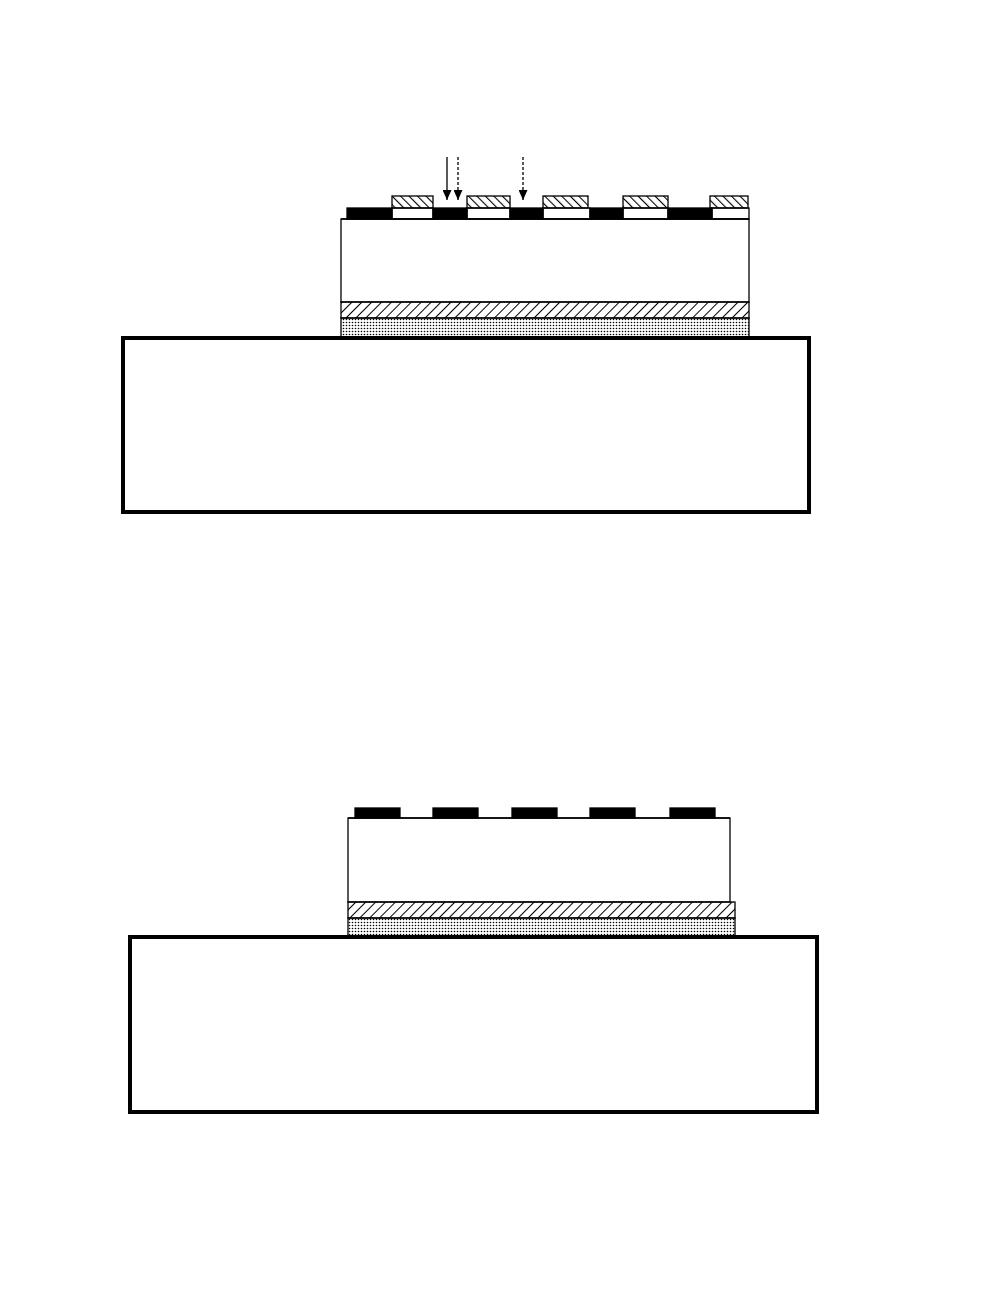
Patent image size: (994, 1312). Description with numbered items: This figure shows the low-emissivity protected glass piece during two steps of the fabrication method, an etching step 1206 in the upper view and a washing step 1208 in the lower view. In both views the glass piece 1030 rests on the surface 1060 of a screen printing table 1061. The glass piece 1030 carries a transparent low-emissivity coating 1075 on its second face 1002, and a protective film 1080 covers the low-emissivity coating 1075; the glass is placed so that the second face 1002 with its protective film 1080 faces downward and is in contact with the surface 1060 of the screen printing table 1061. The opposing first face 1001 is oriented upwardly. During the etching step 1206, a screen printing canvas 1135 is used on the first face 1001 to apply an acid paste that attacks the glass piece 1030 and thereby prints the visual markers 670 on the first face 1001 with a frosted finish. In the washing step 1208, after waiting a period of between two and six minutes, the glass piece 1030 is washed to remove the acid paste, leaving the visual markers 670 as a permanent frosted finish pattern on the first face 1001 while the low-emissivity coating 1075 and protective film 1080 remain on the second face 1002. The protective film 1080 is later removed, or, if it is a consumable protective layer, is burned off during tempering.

The acid etching step 1206 is at (279, 122).
The washing step 1208 is at (248, 782).
The first face 1001 is at (326, 220).
The second face 1002 is at (307, 324).
The surface 1060 is at (163, 335).
The screen printing table 1061 is at (545, 465).
The glass piece 1030 is at (697, 288).
The low-emissivity coating 1075 is at (745, 310).
The protective film 1080 is at (749, 323).
The visual markers 670 is at (718, 215).
The screen printing canvas 1135 is at (647, 197).